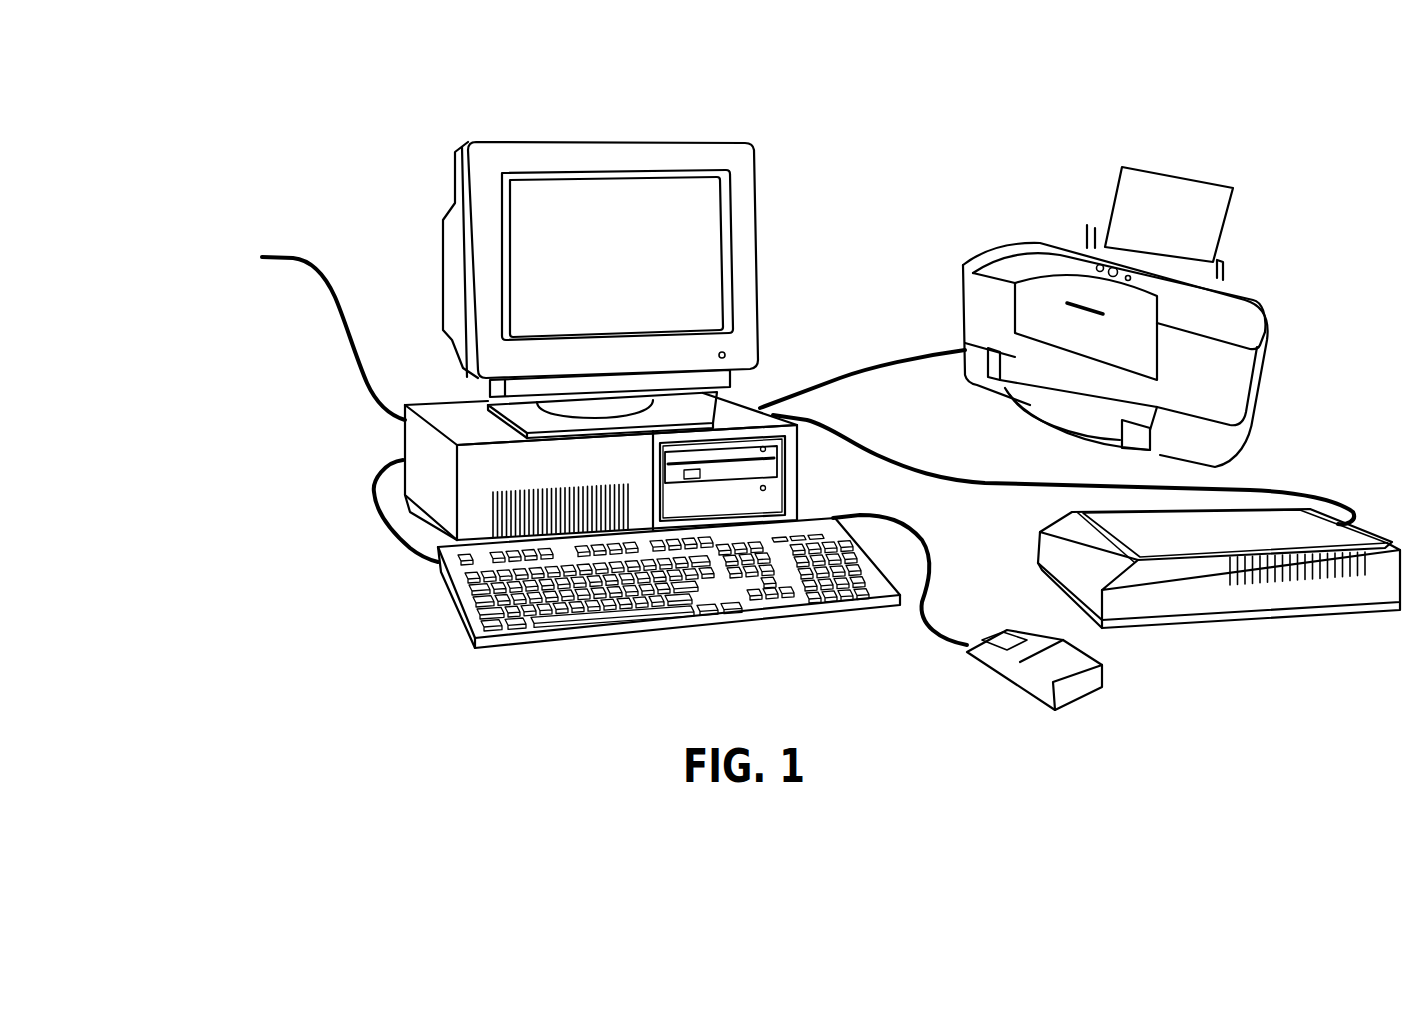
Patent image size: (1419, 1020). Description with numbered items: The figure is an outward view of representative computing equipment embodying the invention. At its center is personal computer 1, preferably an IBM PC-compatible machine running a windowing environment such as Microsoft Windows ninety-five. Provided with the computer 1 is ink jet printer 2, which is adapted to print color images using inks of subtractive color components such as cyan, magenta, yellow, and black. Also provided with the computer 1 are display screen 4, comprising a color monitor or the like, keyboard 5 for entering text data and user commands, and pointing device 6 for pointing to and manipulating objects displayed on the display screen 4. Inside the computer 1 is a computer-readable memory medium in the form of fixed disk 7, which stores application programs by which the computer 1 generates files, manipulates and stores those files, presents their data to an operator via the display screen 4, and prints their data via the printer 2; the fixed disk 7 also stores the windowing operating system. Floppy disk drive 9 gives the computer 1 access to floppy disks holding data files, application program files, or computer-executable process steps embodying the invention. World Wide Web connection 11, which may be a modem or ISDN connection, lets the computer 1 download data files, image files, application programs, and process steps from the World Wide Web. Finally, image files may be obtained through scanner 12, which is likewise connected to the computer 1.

The personal computer 1 is at (800, 145).
The ink jet printer 2 is at (990, 247).
The display screen 4 is at (698, 308).
The keyboard 5 is at (543, 620).
The pointing device 6 is at (1077, 700).
The fixed disk 7 is at (773, 495).
The floppy disk drive 9 is at (747, 468).
The World Wide Web connection 11 is at (343, 300).
The scanner 12 is at (1263, 622).